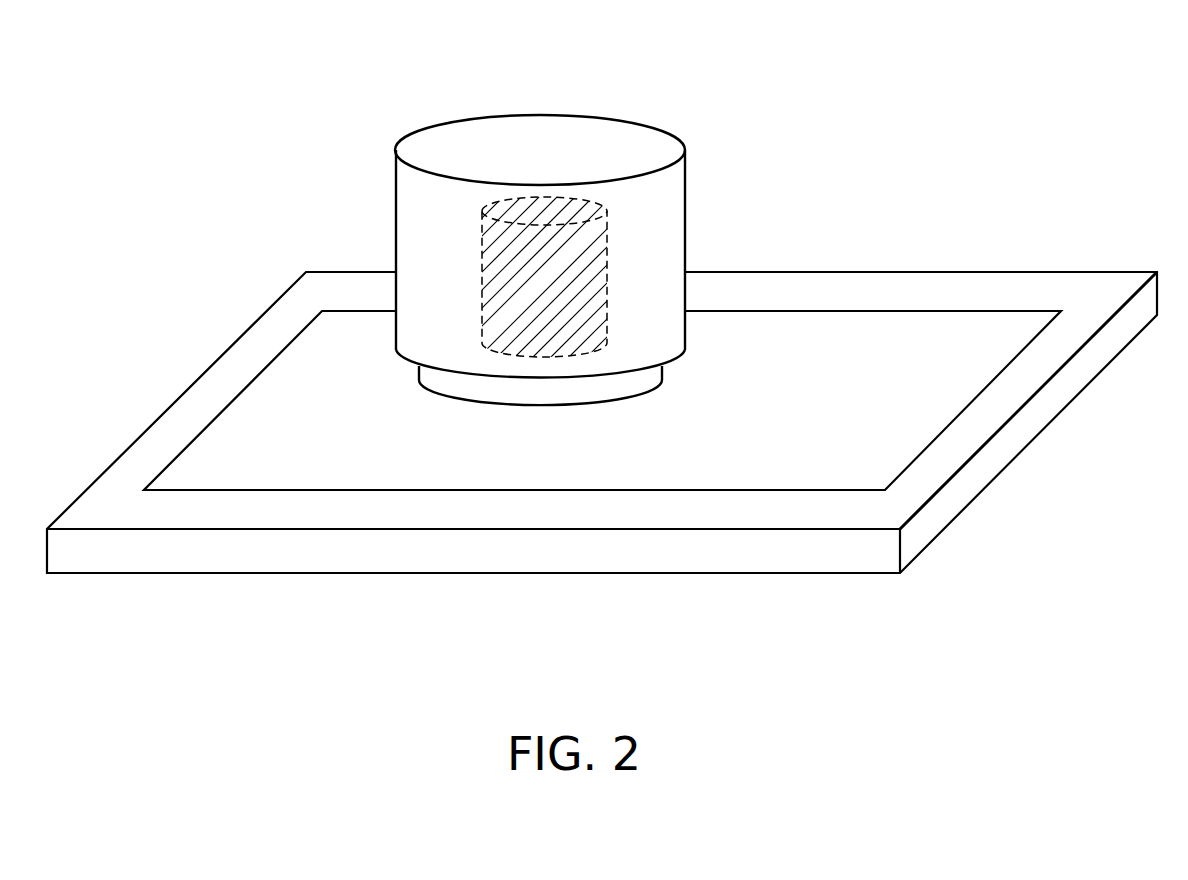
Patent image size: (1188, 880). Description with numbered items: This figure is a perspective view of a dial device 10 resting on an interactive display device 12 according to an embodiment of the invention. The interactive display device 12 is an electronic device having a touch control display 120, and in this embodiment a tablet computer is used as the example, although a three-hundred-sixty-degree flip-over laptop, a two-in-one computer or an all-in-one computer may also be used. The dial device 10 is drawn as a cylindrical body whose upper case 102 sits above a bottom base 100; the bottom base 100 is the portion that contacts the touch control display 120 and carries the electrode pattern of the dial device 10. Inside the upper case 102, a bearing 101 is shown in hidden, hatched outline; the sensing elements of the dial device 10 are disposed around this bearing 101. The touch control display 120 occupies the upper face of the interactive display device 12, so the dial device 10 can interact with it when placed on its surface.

The dial device 10 is at (541, 235).
The interactive display device 12 is at (967, 255).
The bottom base 100 is at (607, 385).
The bearing 101 is at (555, 302).
The upper case 102 is at (617, 282).
The touch control display 120 is at (809, 415).